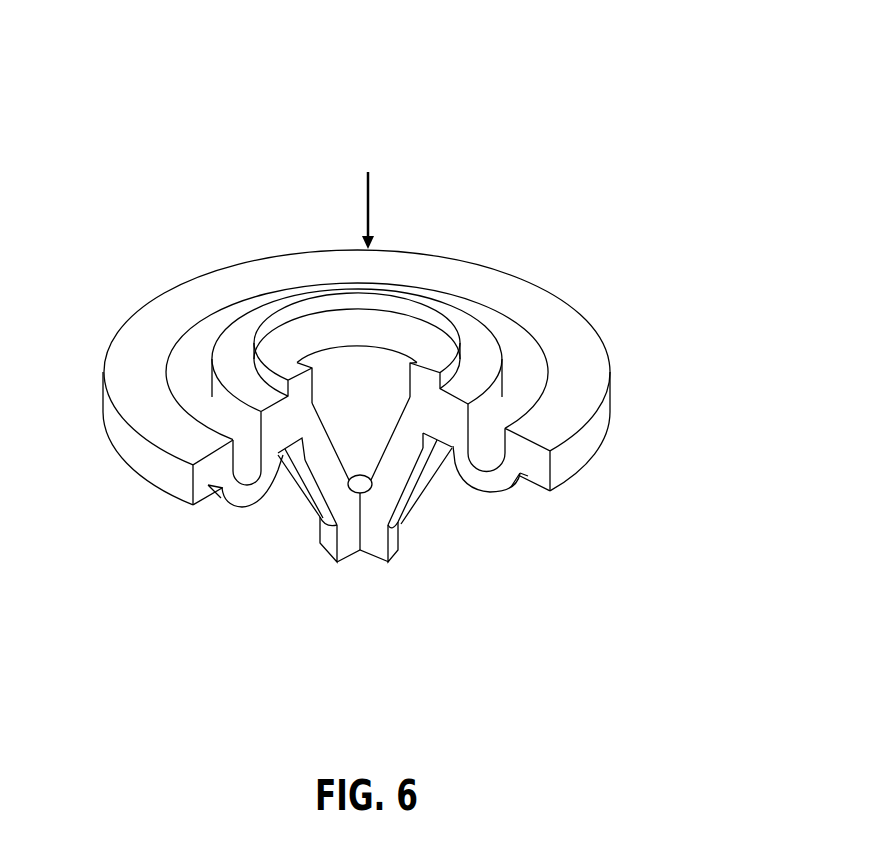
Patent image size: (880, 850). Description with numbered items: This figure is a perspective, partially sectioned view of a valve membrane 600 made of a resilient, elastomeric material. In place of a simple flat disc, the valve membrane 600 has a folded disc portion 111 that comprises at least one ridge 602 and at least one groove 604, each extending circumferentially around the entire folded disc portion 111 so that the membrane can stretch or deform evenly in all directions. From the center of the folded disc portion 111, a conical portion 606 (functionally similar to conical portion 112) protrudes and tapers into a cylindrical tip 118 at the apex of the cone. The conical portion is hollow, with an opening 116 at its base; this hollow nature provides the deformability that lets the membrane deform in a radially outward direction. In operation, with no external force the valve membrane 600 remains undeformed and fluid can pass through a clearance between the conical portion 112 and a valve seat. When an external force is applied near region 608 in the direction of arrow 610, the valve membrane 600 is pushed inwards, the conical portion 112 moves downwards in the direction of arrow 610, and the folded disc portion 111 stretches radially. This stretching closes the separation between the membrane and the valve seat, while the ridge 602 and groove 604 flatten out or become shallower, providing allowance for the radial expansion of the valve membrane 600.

The valve membrane 600 is at (418, 74).
The folded disc portion 111 is at (586, 312).
The ridge 602 is at (195, 298).
The groove 604 is at (230, 423).
The region 608 is at (407, 310).
The opening 116 is at (362, 350).
The conical portion 606 is at (388, 451).
The cylindrical tip 118 is at (335, 546).
The conical portion 112 is at (405, 490).
The arrow 610 is at (387, 210).